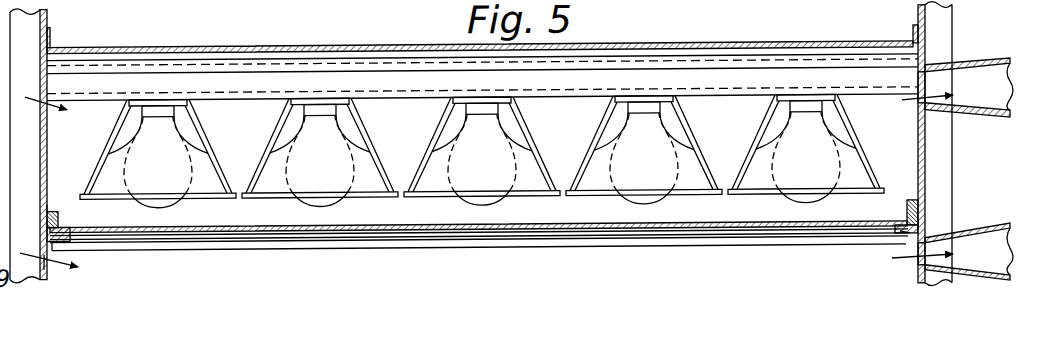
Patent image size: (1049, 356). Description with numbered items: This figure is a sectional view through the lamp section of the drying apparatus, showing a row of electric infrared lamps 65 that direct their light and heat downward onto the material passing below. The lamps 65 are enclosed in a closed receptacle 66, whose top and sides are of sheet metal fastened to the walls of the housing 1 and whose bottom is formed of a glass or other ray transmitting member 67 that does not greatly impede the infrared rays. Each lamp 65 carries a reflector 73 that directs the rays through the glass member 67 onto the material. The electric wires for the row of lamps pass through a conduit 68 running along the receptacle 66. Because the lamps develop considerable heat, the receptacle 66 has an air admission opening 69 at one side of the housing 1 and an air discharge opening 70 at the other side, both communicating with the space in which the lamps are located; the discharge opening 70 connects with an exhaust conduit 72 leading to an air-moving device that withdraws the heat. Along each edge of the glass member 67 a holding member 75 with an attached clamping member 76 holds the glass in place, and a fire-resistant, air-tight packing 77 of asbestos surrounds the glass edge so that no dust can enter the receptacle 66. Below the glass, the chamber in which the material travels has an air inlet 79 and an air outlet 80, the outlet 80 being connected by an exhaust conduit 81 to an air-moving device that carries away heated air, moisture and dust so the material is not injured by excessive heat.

The wall 1 is at (49, 13).
The infrared lamps 65 is at (315, 206).
The closed receptacle 66 is at (762, 56).
The ray transmitting member 67 is at (348, 238).
The conduits 68 is at (662, 85).
The air admission opening 69 is at (47, 82).
The air discharge opening 70 is at (920, 90).
The exhaust conduit 72 is at (990, 73).
The reflector 73 is at (287, 150).
The holding member 75 is at (50, 210).
The clamping member 76 is at (55, 221).
The packing 77 is at (46, 224).
The air inlet 79 is at (50, 262).
The air outlet 80 is at (918, 269).
The exhaust conduit 81 is at (1007, 255).